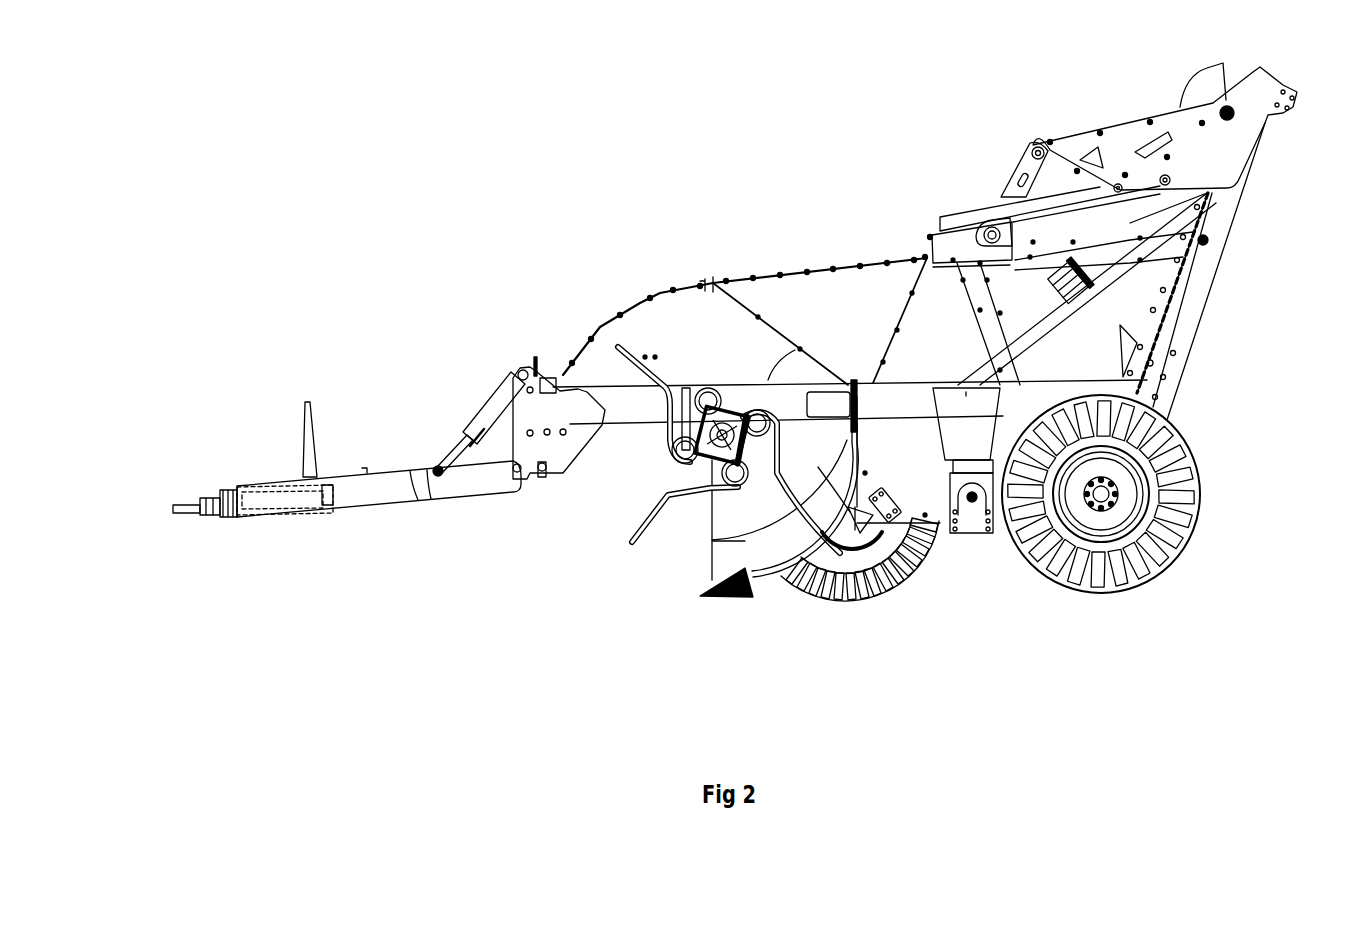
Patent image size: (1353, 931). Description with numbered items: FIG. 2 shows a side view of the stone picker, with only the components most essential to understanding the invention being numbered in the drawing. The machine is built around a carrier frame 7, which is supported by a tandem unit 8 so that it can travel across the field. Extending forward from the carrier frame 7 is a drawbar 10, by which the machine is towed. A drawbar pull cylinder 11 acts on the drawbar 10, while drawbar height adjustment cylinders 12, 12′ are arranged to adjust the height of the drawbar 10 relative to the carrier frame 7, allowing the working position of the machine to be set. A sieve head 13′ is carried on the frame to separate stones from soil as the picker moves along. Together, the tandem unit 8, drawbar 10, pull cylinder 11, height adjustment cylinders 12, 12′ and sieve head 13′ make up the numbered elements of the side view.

The carrier frame 7 is at (617, 400).
The tandem unit 8 is at (980, 540).
The drawbar 10 is at (360, 495).
The drawbar pull cylinder 11 is at (270, 503).
The drawbar height adjustment cylinder 12 is at (497, 397).
The drawbar height adjustment cylinder 12′ is at (559, 418).
The sieve head 13′ is at (725, 593).